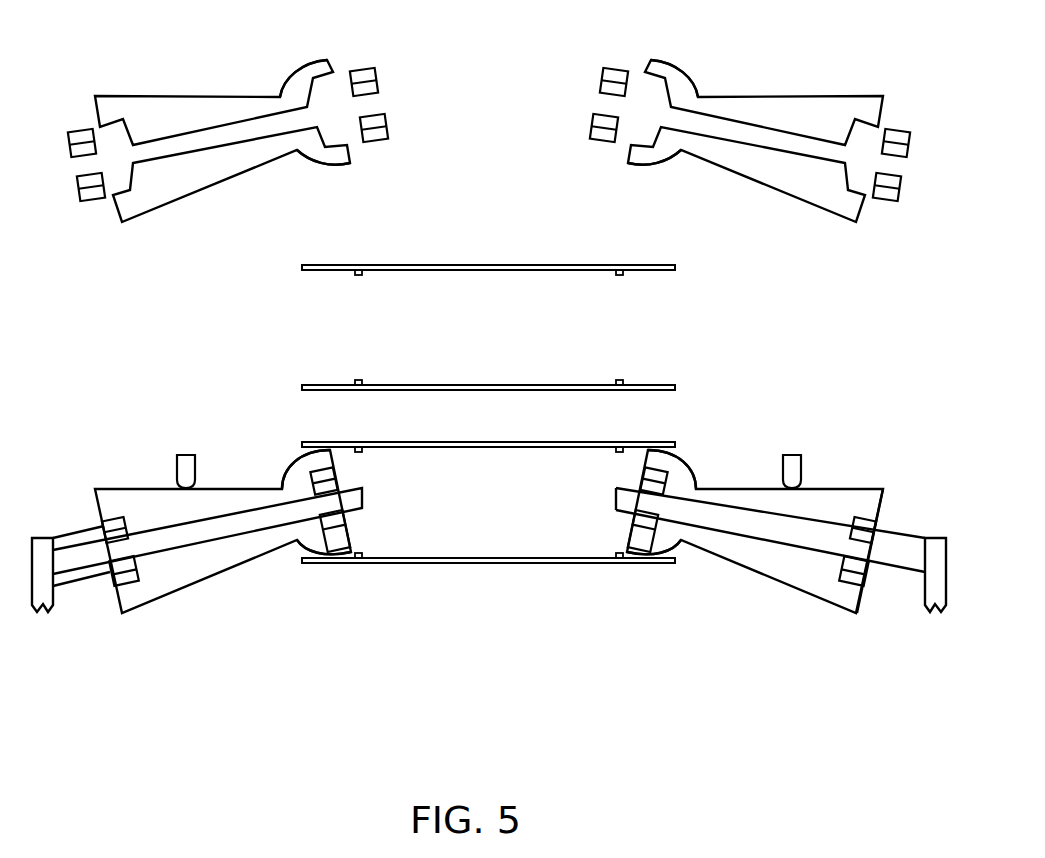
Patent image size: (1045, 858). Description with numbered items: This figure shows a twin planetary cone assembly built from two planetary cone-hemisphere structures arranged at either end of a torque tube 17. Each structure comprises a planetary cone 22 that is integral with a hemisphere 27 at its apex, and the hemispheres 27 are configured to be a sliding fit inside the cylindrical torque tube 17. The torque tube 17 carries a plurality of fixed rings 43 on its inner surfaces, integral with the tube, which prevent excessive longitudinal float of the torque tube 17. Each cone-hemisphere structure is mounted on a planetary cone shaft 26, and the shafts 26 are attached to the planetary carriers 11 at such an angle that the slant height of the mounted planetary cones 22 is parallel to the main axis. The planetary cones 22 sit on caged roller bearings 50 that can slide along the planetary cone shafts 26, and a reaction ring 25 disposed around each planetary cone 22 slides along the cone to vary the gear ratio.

The planetary carrier 11 is at (50, 548).
The torque tube 17 is at (640, 330).
The planetary cone 22 is at (165, 110).
The reaction ring 25 is at (186, 455).
The planetary cone shaft 26 is at (835, 530).
The hemisphere 27 is at (313, 70).
The fixed ring 43 is at (358, 278).
The caged roller bearing 50 is at (78, 128).